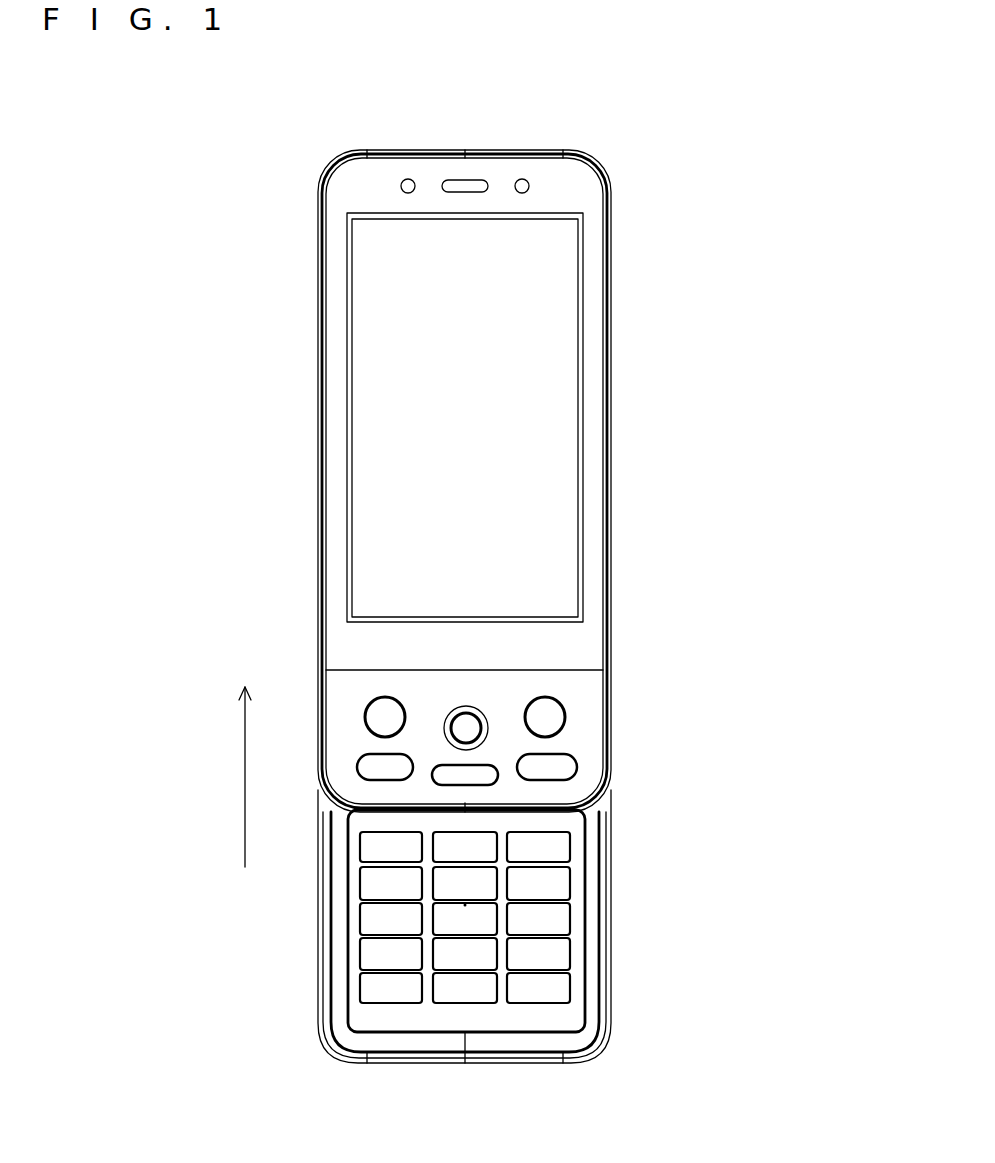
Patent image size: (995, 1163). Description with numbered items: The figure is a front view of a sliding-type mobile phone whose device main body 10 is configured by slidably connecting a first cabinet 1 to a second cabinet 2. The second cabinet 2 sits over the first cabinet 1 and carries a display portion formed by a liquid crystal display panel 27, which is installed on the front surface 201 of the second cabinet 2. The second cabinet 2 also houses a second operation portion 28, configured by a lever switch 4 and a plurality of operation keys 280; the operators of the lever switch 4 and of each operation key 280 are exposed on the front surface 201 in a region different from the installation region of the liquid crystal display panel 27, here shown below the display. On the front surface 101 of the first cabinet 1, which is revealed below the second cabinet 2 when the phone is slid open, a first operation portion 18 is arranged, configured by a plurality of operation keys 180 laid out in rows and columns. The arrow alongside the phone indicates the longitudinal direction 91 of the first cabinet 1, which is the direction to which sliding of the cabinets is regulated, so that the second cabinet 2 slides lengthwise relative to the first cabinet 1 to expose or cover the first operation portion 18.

The device main body 10 is at (622, 198).
The second cabinet 2 is at (605, 286).
The liquid crystal display panel 27 is at (542, 448).
The front surface of the second cabinet 201 is at (352, 648).
The longitudinal direction 91 is at (245, 793).
The lever switch 4 is at (466, 731).
The operation key 280 is at (550, 718).
The second operation portion 28 is at (575, 725).
The first cabinet 1 is at (600, 1048).
The front surface of the first cabinet 101 is at (348, 982).
The operation key 180 is at (553, 847).
The first operation portion 18 is at (580, 920).